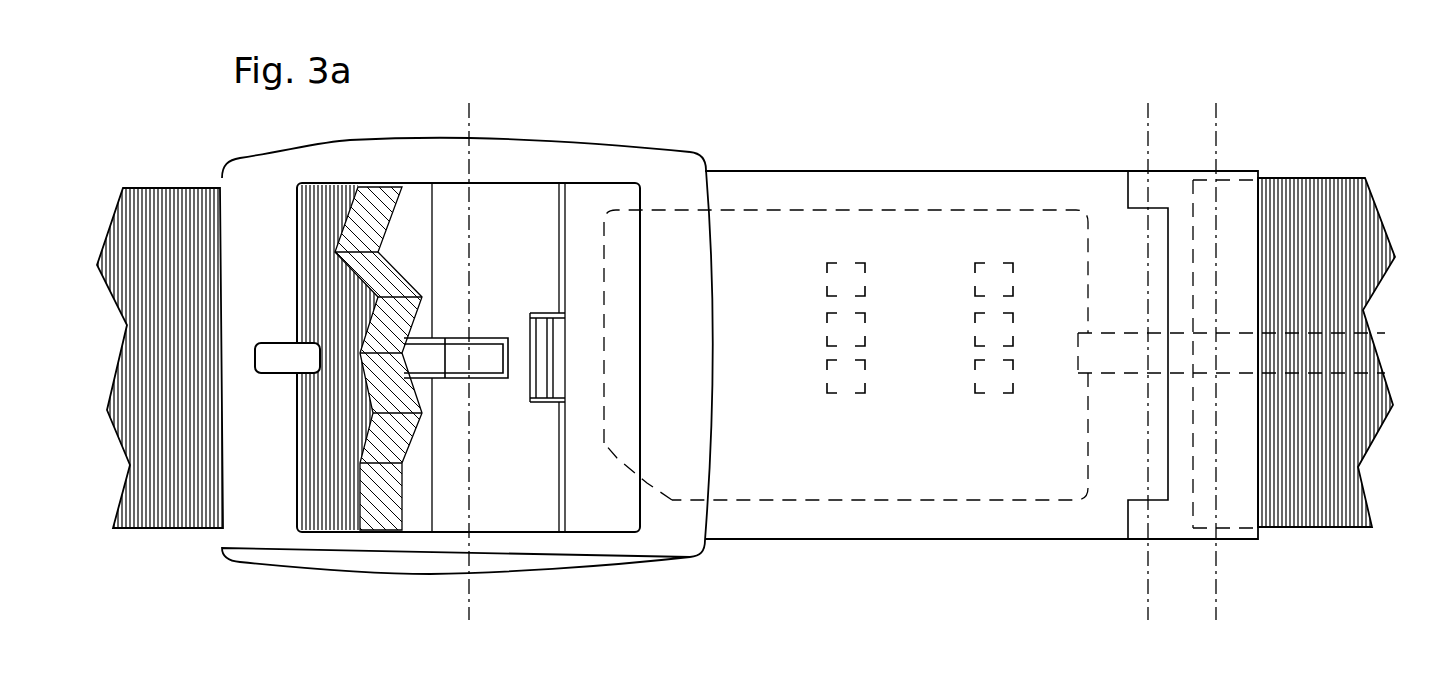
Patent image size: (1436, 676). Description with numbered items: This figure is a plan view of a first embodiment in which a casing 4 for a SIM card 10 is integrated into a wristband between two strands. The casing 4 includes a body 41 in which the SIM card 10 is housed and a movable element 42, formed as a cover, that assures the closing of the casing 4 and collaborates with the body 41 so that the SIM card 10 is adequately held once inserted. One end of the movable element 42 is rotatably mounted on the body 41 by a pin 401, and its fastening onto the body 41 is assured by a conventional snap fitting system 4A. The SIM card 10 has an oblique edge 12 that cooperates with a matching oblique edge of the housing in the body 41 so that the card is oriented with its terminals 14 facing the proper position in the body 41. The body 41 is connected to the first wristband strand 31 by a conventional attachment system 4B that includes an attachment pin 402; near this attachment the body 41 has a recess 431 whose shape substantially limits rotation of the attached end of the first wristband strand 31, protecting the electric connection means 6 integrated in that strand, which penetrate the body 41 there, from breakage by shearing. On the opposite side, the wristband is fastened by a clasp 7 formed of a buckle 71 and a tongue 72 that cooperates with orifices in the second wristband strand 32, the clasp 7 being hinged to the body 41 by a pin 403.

The clasp 7 is at (590, 118).
The buckle 71 is at (665, 185).
The body 41 is at (492, 207).
The tongue 72 is at (276, 358).
The snap fitting system 4A is at (538, 425).
The pin 403 is at (469, 598).
The SIM card 10 is at (955, 508).
The oblique edge 12 is at (630, 468).
The casing 4 is at (982, 309).
The movable element 42 is at (773, 195).
The attachment system 4B is at (1237, 152).
The terminals 14 is at (993, 273).
The pin 401 is at (1148, 598).
The attachment pin 402 is at (1216, 598).
The first wristband strand 31 is at (1320, 530).
The second wristband strand 32 is at (177, 512).
The recess 431 is at (1275, 195).
The electric connection means 6 is at (1358, 382).